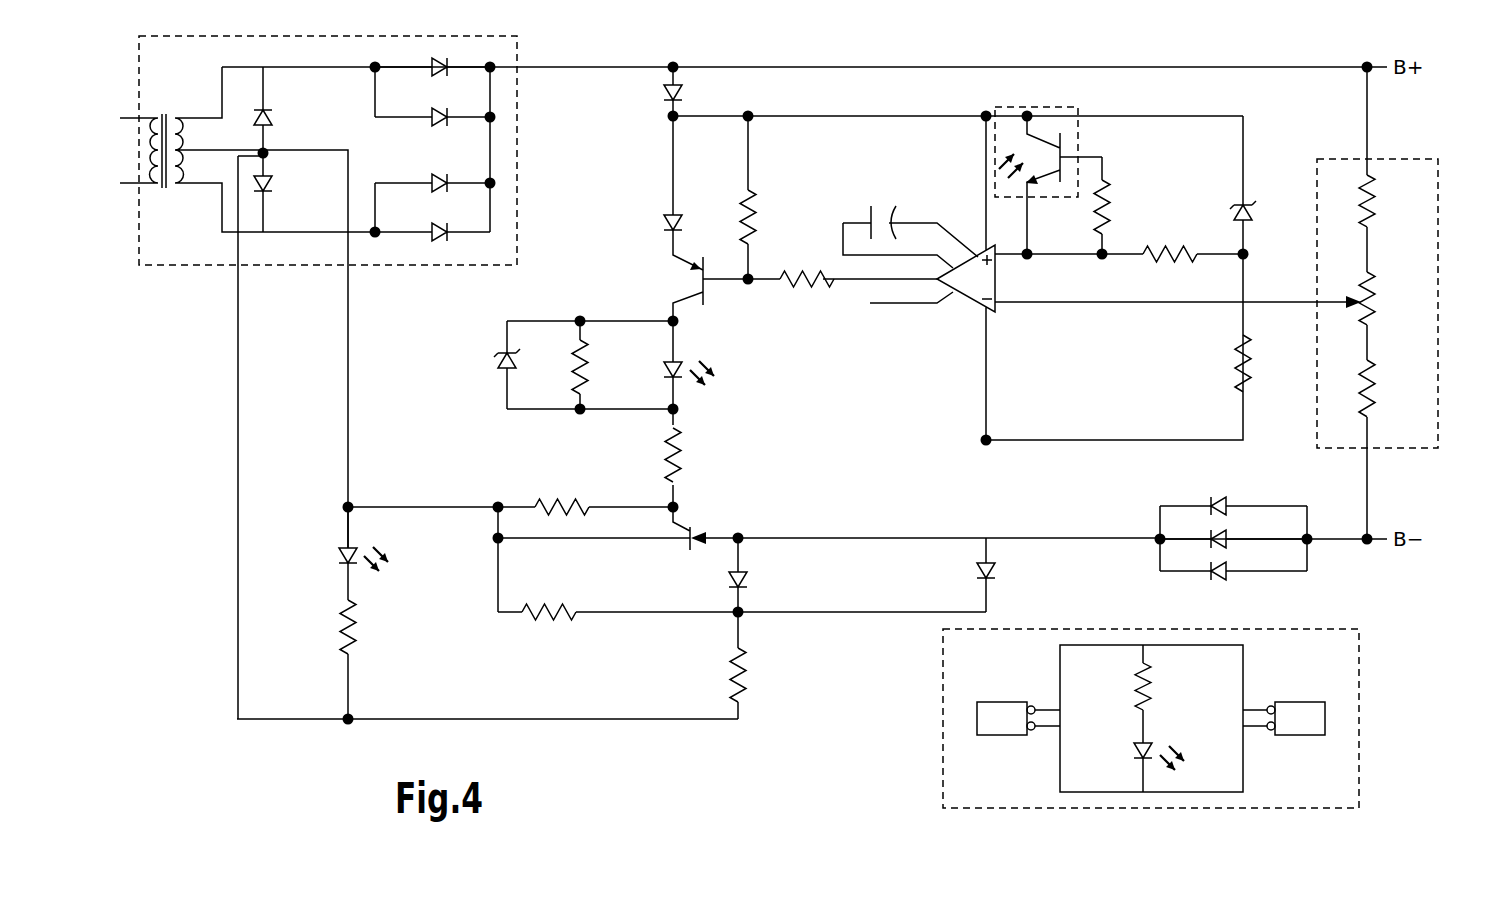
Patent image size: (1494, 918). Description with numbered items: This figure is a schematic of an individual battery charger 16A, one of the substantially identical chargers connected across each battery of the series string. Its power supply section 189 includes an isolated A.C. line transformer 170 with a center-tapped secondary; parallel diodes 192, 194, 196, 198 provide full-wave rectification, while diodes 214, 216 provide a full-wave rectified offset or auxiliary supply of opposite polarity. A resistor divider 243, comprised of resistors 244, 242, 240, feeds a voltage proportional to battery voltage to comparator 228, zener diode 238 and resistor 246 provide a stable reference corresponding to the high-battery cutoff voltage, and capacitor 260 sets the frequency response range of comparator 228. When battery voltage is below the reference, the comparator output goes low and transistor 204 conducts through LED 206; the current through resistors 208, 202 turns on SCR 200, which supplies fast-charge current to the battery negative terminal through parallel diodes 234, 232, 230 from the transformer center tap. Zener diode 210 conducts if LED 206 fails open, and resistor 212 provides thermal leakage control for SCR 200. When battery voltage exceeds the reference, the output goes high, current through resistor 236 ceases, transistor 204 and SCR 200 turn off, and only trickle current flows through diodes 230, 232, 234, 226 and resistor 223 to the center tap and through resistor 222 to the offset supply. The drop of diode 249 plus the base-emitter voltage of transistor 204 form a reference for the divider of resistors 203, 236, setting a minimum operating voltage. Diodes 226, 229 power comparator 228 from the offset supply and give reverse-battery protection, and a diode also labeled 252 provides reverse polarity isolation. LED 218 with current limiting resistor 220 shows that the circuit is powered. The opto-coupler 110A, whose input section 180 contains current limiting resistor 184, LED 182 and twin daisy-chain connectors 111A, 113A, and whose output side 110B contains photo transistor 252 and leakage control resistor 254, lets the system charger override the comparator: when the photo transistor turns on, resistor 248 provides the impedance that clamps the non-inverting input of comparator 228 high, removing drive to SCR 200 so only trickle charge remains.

The power supply section 189 is at (517, 38).
The transformer 170 is at (174, 118).
The diode 192 is at (432, 66).
The diode 194 is at (432, 120).
The diode 196 is at (432, 182).
The diode 198 is at (432, 236).
The diode 214 is at (273, 123).
The diode 216 is at (270, 180).
The photo transistor 252 is at (682, 90).
The diode 249 is at (668, 215).
The resistor 203 is at (752, 225).
The transistor 204 is at (708, 302).
The resistor 236 is at (826, 285).
The capacitor 260 is at (868, 210).
The comparator 228 is at (966, 299).
The opto-coupler 110B is at (1010, 107).
The leakage control resistor 254 is at (1112, 218).
The resistor 248 is at (1145, 258).
The zener diode 238 is at (1254, 211).
The resistor 246 is at (1240, 356).
The resistor divider 243 is at (1438, 198).
The resistor 244 is at (1372, 200).
The resistor 242 is at (1372, 303).
The resistor 240 is at (1372, 400).
The zener diode 210 is at (497, 368).
The resistor 208 is at (587, 372).
The LED 206 is at (680, 362).
The resistor 202 is at (682, 472).
The leakage control resistor 212 is at (546, 500).
The SCR 200 is at (700, 534).
The LED 218 is at (345, 549).
The current limiting resistor 220 is at (357, 641).
The resistor 223 is at (528, 610).
The diode 226 is at (748, 582).
The resistor 222 is at (745, 685).
The diode 229 is at (986, 565).
The diode 234 is at (1212, 503).
The diode 232 is at (1230, 539).
The diode 230 is at (1212, 576).
The remote control / indicator unit 180 is at (1272, 671).
The current limiting resistor 184 is at (1150, 690).
The LED 182 is at (1150, 742).
The connector 111A is at (977, 718).
The connector 113A is at (1325, 720).
The opto-coupler 110A is at (1176, 792).
The battery charger 16A is at (608, 727).